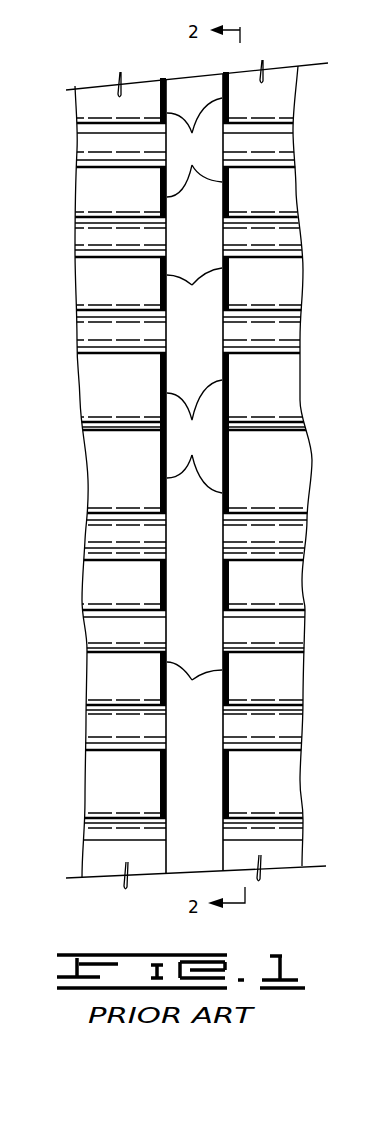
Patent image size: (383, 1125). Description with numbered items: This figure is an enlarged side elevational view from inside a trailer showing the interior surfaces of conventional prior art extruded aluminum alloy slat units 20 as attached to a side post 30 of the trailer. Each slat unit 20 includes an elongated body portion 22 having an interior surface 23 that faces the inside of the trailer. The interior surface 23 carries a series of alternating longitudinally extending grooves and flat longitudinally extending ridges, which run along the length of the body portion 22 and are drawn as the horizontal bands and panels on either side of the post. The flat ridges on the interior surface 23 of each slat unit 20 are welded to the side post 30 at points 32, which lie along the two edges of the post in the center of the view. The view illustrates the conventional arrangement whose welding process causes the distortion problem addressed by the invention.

The slat unit 20 is at (93, 190).
The elongated body portion 22 is at (130, 291).
The interior surface 23 is at (127, 476).
The side post 30 is at (204, 234).
The points 32 is at (194, 401).